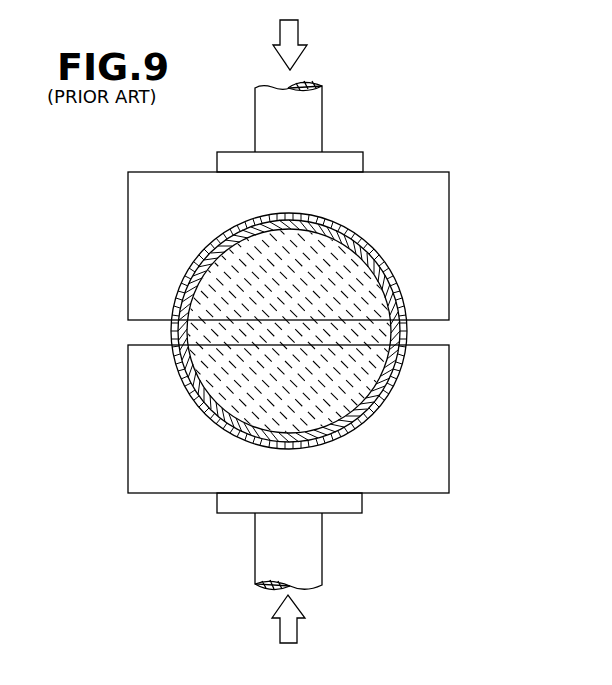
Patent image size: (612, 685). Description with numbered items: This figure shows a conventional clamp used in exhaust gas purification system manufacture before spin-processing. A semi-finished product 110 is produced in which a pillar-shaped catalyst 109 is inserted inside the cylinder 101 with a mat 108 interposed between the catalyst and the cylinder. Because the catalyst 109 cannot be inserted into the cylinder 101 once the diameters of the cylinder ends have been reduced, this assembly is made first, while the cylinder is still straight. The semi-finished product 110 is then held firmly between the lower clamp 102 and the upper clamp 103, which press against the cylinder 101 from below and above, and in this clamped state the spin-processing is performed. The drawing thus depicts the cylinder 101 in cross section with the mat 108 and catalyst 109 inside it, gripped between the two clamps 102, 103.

The cylinder 101 is at (168, 330).
The lower clamp 102 is at (438, 428).
The upper clamp 103 is at (440, 240).
The mat 108 is at (178, 370).
The pillar-shaped catalyst 109 is at (263, 343).
The semi-finished product 110 is at (413, 329).